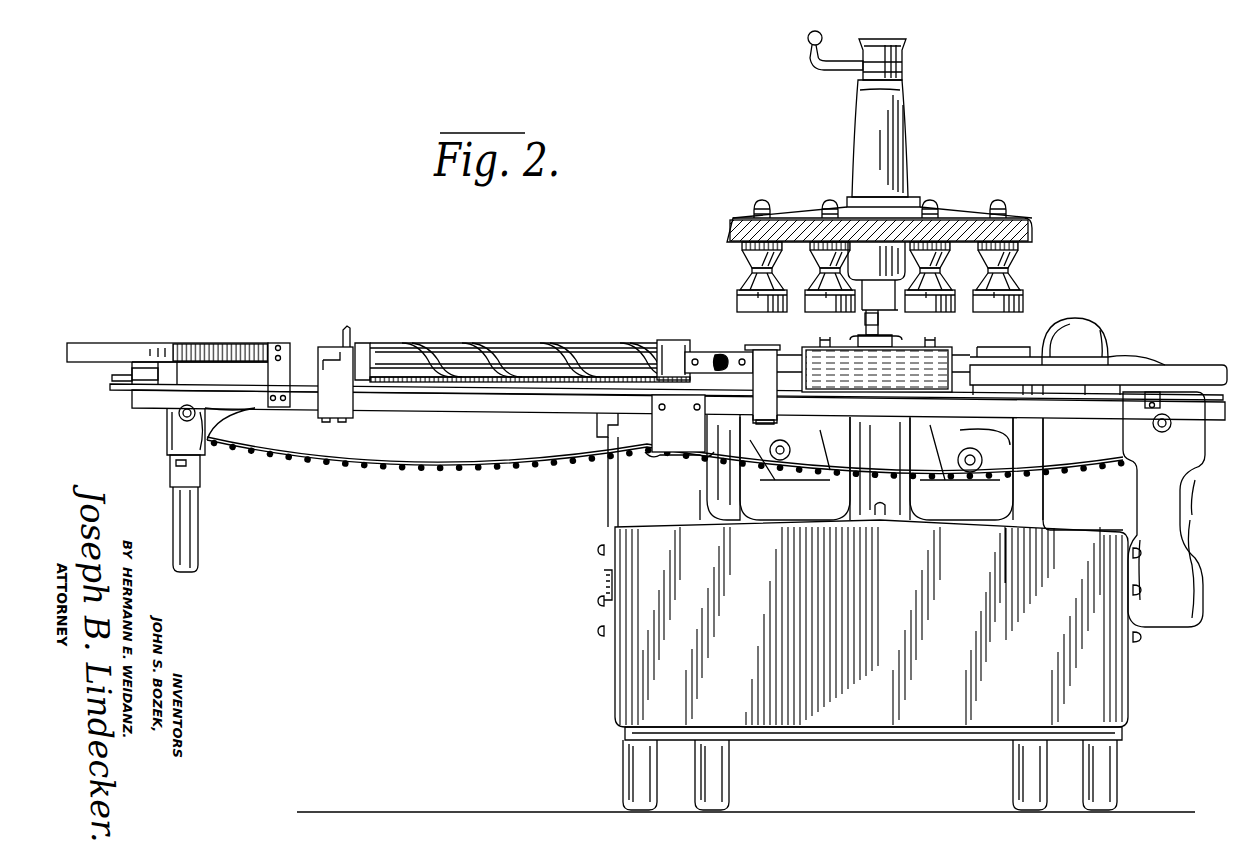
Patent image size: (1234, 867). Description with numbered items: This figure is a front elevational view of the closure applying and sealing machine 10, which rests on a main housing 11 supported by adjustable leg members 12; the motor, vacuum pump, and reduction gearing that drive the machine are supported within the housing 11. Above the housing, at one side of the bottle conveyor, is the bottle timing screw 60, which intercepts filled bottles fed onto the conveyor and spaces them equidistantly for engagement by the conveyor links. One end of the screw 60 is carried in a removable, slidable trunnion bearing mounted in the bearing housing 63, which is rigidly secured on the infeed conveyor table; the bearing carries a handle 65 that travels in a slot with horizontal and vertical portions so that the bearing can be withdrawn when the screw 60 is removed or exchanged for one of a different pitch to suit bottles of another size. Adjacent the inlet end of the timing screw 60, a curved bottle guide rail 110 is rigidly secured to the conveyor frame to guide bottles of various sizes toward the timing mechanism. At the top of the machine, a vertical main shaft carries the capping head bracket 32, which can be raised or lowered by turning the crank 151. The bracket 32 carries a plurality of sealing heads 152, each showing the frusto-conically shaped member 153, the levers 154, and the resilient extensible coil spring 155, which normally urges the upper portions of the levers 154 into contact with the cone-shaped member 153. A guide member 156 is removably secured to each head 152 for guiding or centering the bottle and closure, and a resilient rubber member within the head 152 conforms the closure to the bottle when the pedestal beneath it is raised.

The closure applying and sealing machine 10 is at (1110, 721).
The main housing 11 is at (682, 617).
The adjustable leg members 12 is at (633, 770).
The capping head bracket 32 is at (1030, 234).
The timing screw 60 is at (666, 345).
The bearing housing 63 is at (325, 347).
The handle 65 is at (350, 330).
The curved bottle guide rail 110 is at (114, 350).
The crank 151 is at (813, 64).
The sealing head 152 is at (1020, 246).
The frusto-conically shaped member 153 is at (822, 257).
The levers 154 is at (1012, 284).
The coil spring 155 is at (746, 271).
The guide member 156 is at (746, 302).